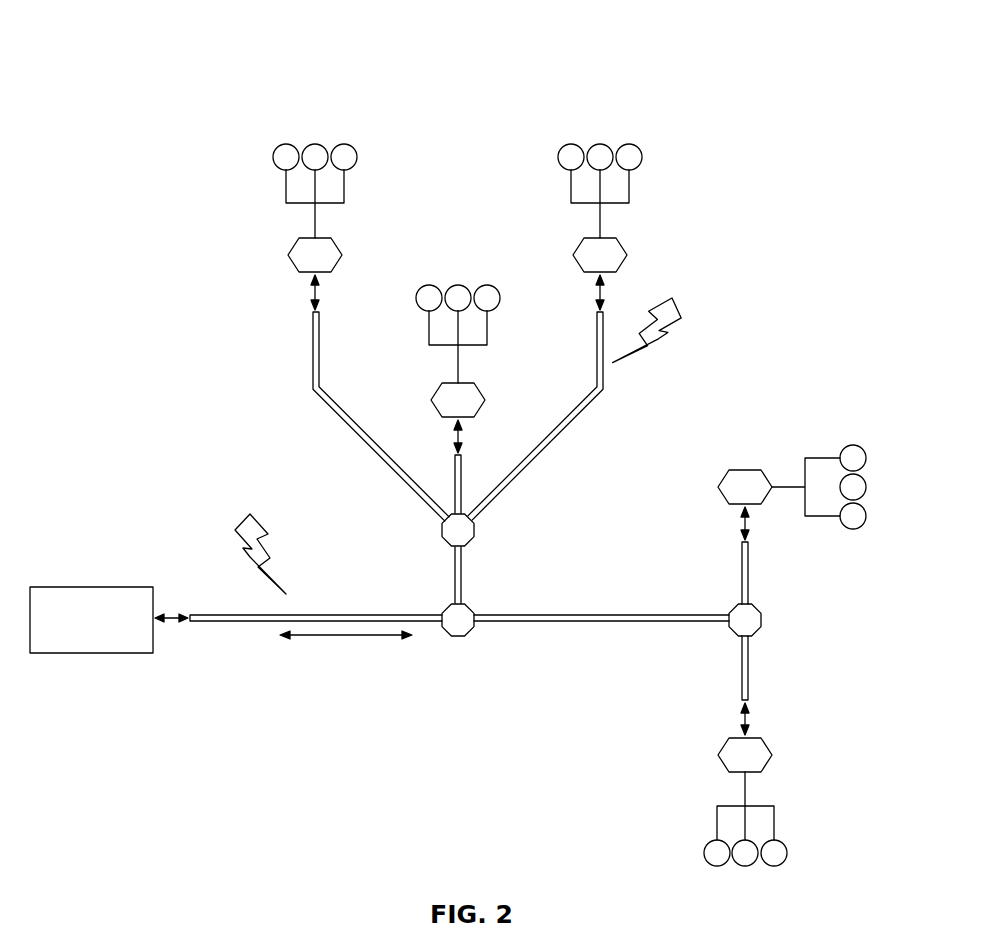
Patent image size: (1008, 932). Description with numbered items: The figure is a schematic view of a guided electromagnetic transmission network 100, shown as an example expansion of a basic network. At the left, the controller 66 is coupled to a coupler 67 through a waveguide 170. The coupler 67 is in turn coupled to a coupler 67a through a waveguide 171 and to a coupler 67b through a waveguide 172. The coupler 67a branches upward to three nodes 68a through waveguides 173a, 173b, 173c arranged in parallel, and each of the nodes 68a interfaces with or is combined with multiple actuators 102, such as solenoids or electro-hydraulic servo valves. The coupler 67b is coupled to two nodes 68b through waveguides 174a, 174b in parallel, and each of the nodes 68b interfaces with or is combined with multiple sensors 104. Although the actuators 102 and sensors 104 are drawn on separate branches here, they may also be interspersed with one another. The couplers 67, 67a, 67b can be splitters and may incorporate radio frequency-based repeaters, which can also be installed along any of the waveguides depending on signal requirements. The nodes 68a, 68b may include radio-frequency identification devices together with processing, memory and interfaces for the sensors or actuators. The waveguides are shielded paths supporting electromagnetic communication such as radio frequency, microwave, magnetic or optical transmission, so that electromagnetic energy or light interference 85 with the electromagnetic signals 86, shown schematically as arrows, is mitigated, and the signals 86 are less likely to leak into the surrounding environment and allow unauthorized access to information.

The guided electromagnetic transmission network 100 is at (184, 36).
The controller 66 is at (108, 633).
The coupler 67 is at (457, 639).
The coupler 67a is at (473, 541).
The coupler 67b is at (763, 618).
The node 68a is at (337, 243).
The node 68b is at (747, 467).
The electromagnetic energy or light interference 85 is at (262, 525).
The electromagnetic signal 86 is at (345, 639).
The actuator 102 is at (345, 144).
The sensor 104 is at (851, 443).
The waveguide 170 is at (233, 624).
The waveguide 171 is at (453, 568).
The waveguide 172 is at (583, 624).
The waveguide 173a is at (310, 350).
The waveguide 173b is at (453, 485).
The waveguide 173c is at (538, 455).
The waveguide 174a is at (738, 570).
The waveguide 174b is at (738, 668).